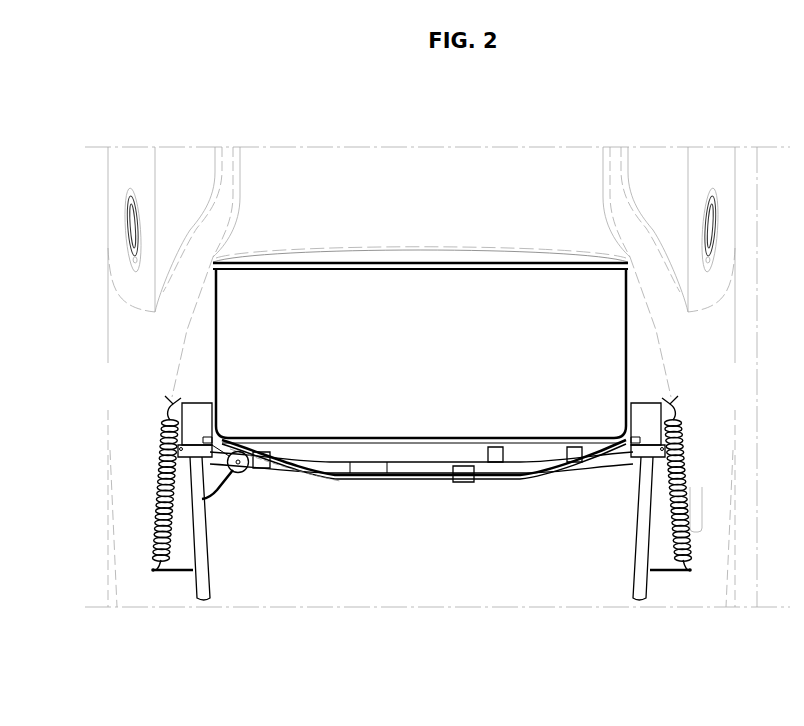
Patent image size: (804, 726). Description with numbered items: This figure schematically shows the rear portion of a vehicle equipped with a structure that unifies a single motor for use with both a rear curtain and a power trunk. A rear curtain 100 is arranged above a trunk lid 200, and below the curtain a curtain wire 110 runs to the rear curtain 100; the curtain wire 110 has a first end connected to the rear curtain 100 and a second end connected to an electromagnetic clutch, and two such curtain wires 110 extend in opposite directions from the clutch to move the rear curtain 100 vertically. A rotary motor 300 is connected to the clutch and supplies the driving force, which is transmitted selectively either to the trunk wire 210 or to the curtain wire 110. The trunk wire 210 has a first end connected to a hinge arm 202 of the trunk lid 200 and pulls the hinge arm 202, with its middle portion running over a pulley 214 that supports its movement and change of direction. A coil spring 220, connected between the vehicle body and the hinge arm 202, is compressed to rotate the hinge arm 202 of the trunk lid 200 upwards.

The rear curtain 100 is at (420, 284).
The curtain wire 110 is at (517, 467).
The trunk lid 200 is at (553, 537).
The hinge arm 202 is at (202, 585).
The trunk wire 210 is at (323, 478).
The pulley 214 is at (245, 476).
The coil spring 220 is at (166, 521).
The rotary motor 300 is at (463, 482).